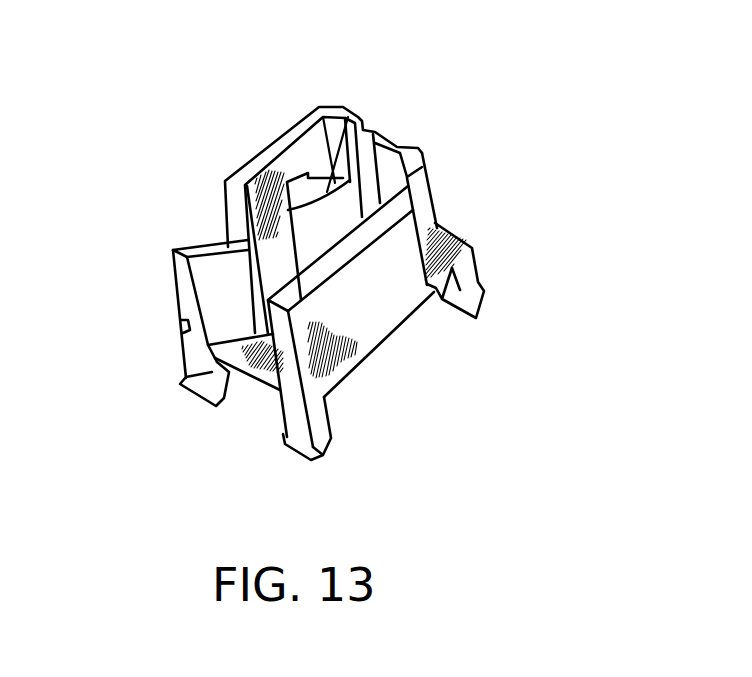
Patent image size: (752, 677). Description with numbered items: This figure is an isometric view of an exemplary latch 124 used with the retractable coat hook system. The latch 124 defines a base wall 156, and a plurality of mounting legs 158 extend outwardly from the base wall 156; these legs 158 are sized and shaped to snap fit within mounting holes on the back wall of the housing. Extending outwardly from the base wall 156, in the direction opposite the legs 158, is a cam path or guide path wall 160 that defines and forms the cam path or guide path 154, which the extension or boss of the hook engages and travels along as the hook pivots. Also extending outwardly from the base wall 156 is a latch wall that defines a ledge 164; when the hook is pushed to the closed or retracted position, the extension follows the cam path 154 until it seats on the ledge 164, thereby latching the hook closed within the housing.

The latch 124 is at (430, 192).
The cam path 154 is at (280, 273).
The base wall 156 is at (434, 292).
The mounting legs 158 is at (478, 277).
The cam path wall 160 is at (283, 139).
The ledge 164 is at (348, 117).